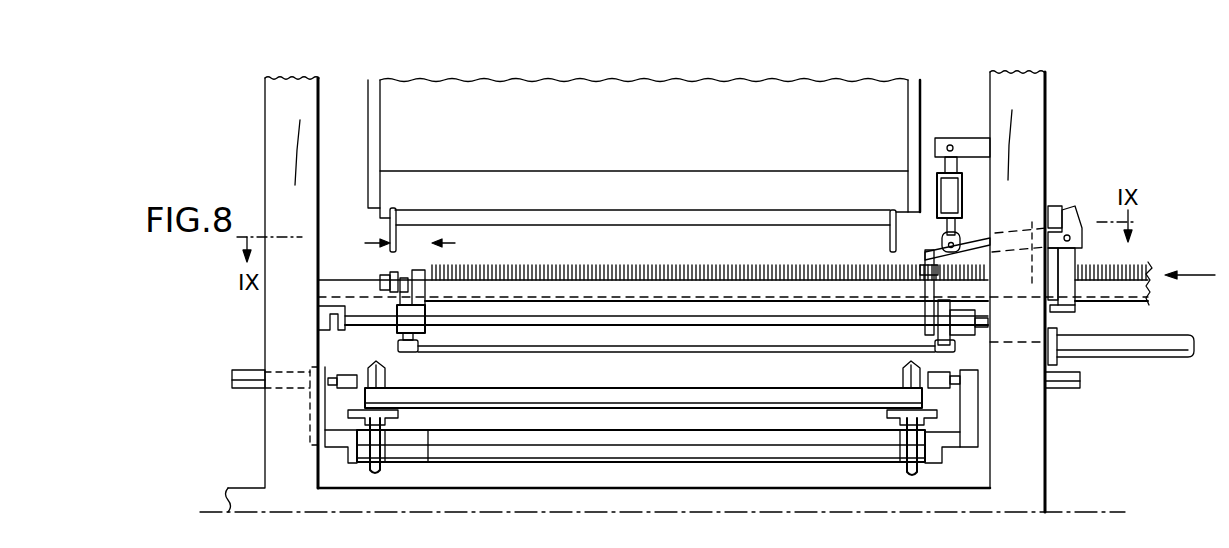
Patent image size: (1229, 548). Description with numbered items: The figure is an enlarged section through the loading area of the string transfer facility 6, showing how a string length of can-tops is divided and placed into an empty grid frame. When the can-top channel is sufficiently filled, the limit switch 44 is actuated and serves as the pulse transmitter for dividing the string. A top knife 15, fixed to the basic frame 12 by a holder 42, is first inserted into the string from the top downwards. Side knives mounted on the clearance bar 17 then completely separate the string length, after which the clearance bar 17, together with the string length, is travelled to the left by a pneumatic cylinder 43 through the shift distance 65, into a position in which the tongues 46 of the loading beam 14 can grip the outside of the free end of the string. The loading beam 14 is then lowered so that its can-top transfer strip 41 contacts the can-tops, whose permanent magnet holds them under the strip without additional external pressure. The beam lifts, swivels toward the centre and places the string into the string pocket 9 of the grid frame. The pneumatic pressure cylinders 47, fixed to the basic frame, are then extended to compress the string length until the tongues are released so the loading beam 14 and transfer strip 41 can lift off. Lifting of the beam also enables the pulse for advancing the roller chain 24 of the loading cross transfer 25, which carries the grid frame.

The string transfer facility 6 is at (945, 85).
The string pocket 9 is at (694, 388).
The basic frame 12 is at (273, 137).
The loading beam 14 is at (766, 94).
The top knife 15 is at (979, 246).
The clearance bar 17 is at (490, 342).
The roller chain 24 is at (912, 478).
The loading cross transfer 25 is at (932, 403).
The can-top transfer strip 41 is at (698, 211).
The holder 42 is at (1067, 290).
The pneumatic cylinder 43 is at (1155, 353).
The limit switch 44 is at (405, 272).
The tongues 46 is at (890, 241).
The pneumatic pressure cylinders 47 is at (243, 390).
The shift distance 65 is at (403, 248).